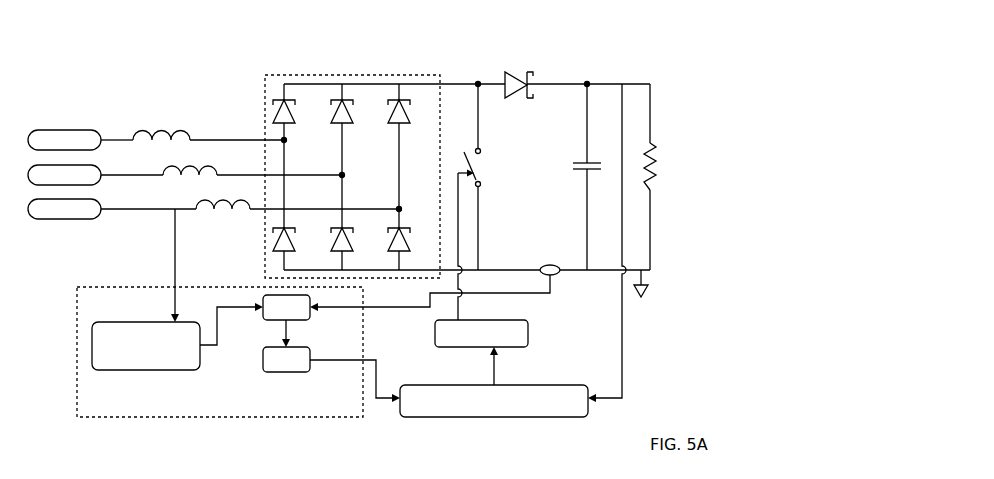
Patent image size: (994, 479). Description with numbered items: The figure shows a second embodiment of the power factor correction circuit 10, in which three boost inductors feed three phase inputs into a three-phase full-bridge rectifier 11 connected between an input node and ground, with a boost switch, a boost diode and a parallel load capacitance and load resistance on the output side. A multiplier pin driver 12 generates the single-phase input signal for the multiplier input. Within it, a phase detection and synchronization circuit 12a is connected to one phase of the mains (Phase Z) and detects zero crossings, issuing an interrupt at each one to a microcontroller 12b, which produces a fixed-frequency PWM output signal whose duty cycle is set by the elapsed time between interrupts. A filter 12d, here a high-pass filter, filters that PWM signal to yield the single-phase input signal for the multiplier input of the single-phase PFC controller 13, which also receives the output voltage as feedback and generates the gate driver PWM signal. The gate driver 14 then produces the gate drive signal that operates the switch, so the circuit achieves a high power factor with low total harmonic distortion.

The power factor correction circuit 10 is at (176, 67).
The three-phase full-bridge rectifier 11 is at (265, 75).
The multiplier pin driver 12 is at (77, 405).
The phase detection and synchronization circuit 12a is at (130, 370).
The microcontroller 12b is at (265, 320).
The filter 12d is at (260, 365).
The single-phase PFC controller 13 is at (400, 419).
The gate driver 14 is at (435, 337).